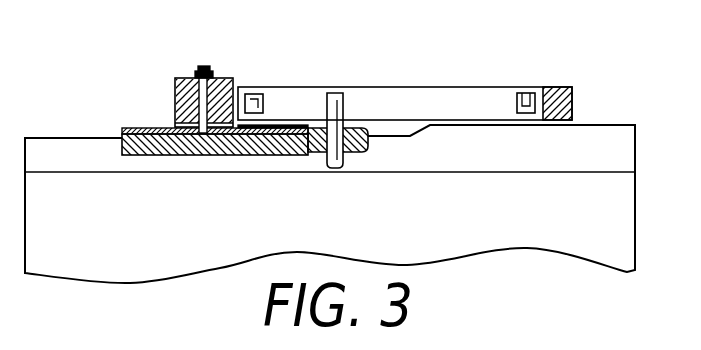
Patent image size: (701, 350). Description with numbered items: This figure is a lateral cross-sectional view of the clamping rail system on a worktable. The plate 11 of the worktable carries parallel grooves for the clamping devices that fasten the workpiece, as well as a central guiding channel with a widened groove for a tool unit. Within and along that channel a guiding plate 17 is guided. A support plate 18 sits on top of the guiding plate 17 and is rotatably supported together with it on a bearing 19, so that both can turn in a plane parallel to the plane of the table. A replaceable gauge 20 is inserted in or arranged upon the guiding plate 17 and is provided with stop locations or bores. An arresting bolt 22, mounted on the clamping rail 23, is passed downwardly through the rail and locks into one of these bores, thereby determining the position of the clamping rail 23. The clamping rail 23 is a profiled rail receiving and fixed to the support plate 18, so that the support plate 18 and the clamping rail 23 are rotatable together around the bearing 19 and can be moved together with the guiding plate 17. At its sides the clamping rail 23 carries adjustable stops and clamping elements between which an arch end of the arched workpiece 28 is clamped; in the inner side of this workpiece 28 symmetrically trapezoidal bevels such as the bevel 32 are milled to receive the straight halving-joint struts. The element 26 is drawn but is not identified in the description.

The plate 11 is at (478, 160).
The guiding plate 17 is at (143, 156).
The support plate 18 is at (311, 155).
The bearing 19 is at (348, 93).
The replaceable gauge 20 is at (145, 128).
The arresting bolt 22 is at (206, 68).
The clamping rail 23 is at (176, 84).
The bar 26 is at (258, 94).
The arched workpiece 28 is at (560, 87).
The bevel 32 is at (524, 92).